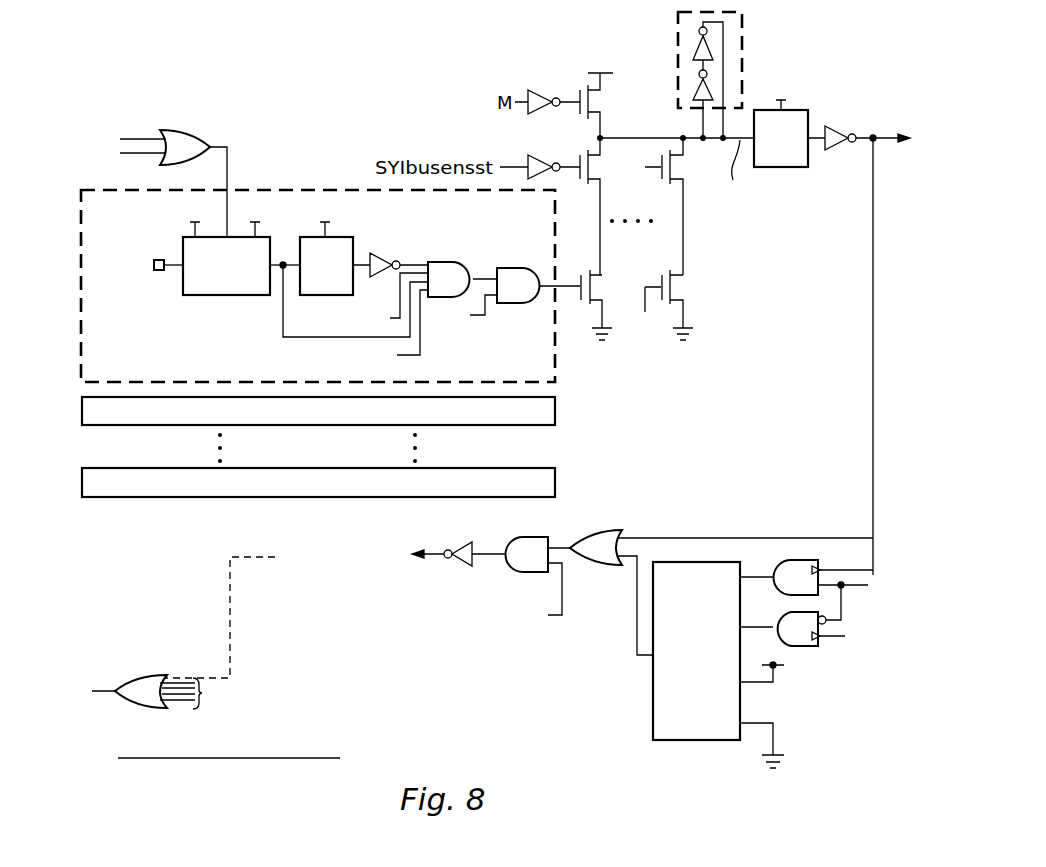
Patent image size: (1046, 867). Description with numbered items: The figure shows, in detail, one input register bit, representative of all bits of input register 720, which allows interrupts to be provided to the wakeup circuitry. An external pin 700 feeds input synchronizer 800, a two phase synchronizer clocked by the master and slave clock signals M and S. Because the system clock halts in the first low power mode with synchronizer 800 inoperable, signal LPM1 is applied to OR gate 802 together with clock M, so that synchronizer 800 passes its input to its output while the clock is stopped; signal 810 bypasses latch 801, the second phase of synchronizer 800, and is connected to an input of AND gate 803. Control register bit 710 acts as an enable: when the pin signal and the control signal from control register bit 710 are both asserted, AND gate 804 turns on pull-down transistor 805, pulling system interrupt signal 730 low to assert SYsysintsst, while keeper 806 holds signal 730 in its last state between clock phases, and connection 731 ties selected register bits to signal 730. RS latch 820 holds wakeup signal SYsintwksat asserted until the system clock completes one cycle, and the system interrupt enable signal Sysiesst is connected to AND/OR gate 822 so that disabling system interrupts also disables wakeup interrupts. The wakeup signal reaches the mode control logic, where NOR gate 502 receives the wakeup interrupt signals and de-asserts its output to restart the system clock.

The input register 720 is at (81, 190).
The OR gate 802 is at (195, 130).
The external pin 700 is at (152, 261).
The input synchronizer 800 is at (183, 286).
The bypass signal 810 is at (283, 308).
The latch 801 is at (375, 230).
The control register bit 710 is at (364, 304).
The AND gate 803 is at (475, 240).
The AND gate 804 is at (514, 305).
The connection 731 is at (683, 138).
The pull-down transistor 805 is at (598, 287).
The keeper 806 is at (742, 52).
The system interrupt signal 730 is at (713, 140).
The AND/OR gate 822 is at (510, 540).
The RS latch 820 is at (653, 700).
The NOR gate 502 is at (218, 699).